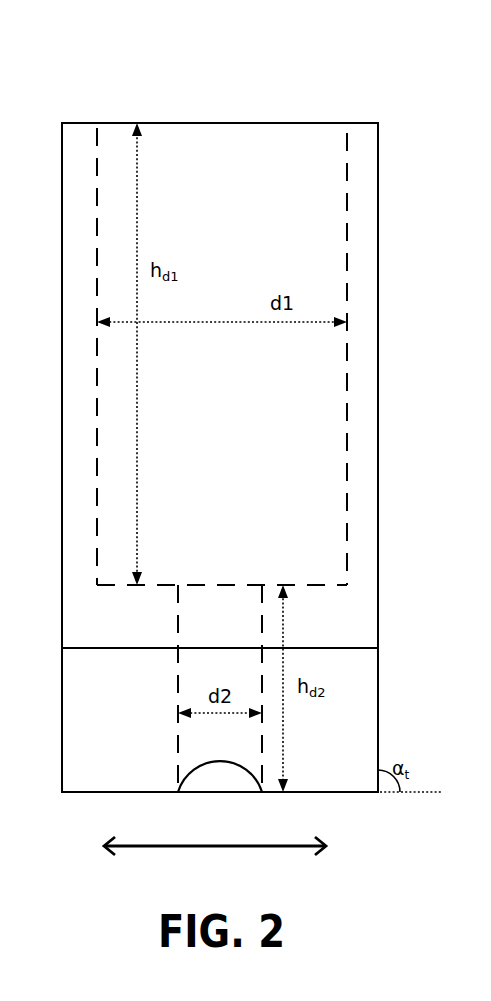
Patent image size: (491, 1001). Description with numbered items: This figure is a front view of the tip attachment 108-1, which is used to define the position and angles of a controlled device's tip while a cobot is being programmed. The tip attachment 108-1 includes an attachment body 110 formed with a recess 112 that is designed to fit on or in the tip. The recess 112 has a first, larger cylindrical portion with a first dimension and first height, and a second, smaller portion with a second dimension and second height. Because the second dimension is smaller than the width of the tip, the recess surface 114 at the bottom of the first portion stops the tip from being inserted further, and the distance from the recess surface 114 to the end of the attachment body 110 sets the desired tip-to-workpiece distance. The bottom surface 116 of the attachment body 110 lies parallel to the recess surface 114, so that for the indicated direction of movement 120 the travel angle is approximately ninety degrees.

The tip attachment 108-1 is at (160, 50).
The attachment body 110 is at (220, 626).
The recess 112 is at (240, 375).
The recess surface 114 is at (165, 585).
The bottom surface 116 is at (311, 792).
The direction of movement 120 is at (215, 862).